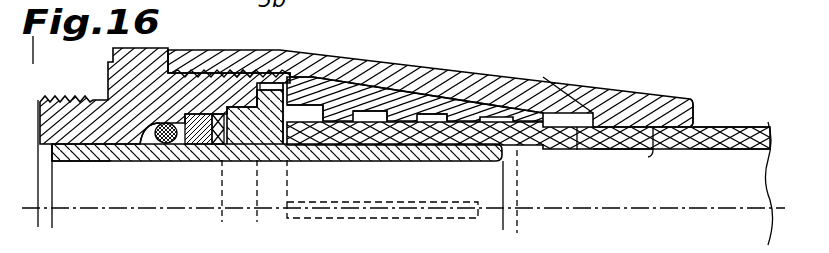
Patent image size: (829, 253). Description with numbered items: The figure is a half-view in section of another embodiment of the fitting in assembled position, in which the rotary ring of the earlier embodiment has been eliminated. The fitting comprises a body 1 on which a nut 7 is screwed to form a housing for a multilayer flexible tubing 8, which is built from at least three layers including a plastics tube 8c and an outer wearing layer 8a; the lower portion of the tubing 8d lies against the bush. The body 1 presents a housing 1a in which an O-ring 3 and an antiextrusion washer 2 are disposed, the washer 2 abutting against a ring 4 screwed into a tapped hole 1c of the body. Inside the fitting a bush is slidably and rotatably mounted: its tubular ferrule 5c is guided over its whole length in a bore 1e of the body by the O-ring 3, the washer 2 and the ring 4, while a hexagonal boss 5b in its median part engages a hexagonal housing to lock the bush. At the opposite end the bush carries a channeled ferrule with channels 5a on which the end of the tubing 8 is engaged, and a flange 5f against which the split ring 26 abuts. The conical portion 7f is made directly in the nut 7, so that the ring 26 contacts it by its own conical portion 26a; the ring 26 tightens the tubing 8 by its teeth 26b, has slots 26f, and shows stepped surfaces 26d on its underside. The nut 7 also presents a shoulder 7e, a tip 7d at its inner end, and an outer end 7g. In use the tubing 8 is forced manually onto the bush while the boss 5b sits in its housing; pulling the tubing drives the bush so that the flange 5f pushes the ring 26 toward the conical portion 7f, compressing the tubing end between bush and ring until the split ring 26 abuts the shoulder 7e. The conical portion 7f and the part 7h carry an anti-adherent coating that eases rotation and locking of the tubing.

The body 1 is at (74, 98).
The housing of the body 1a is at (140, 146).
The tapped hole 1c is at (190, 108).
The bore of the body 1e is at (100, 163).
The antiextrusion washer 2 is at (187, 146).
The O-ring 3 is at (162, 140).
The ring 4 is at (202, 108).
The channels 5a is at (433, 149).
The boss 5b is at (246, 66).
The tubular ferrule 5c is at (82, 158).
The flange 5f is at (298, 76).
The nut 7 is at (572, 78).
The cover ring tip 7d is at (269, 70).
The shoulder of the nut 7e is at (577, 148).
The conical portion 7f is at (552, 84).
The cover ring outer end 7g is at (620, 88).
The part of the nut 7h is at (654, 130).
The multilayer flexible tubing 8 is at (760, 127).
The wearing layer 8a is at (710, 126).
The plastics tube 8c is at (740, 144).
The gasket lower portion 8d is at (606, 150).
The split ring 26 is at (515, 95).
The conical portion of the ring 26a is at (475, 98).
The teeth 26b is at (370, 110).
The wedge ring steps 26d is at (310, 102).
The slots 26f is at (363, 218).